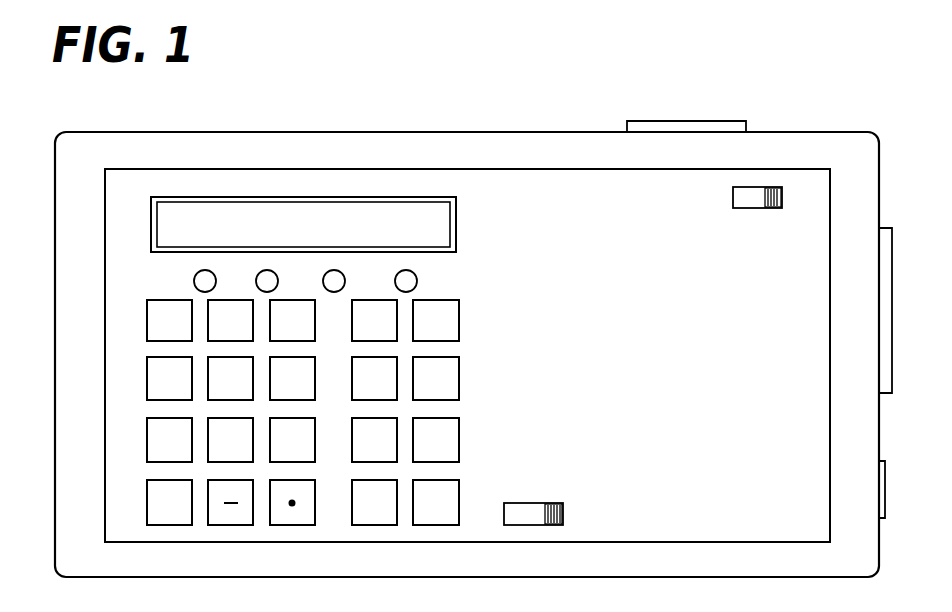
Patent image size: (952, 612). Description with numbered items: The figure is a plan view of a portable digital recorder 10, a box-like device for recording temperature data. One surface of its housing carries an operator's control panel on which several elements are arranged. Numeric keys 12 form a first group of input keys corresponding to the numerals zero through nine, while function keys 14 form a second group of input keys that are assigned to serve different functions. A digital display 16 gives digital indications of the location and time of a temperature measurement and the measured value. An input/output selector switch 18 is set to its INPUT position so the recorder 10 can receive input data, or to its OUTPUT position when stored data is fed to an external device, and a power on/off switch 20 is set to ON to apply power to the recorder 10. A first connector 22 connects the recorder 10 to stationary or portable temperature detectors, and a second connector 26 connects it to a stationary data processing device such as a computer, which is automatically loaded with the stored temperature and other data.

The portable digital recorder 10 is at (454, 127).
The numeric keys 12 is at (144, 517).
The function keys 14 is at (344, 518).
The digital display 16 is at (441, 236).
The input/output selector switch 18 is at (775, 210).
The power on/off switch 20 is at (555, 503).
The first connector 22 is at (717, 121).
The second connector 26 is at (886, 340).